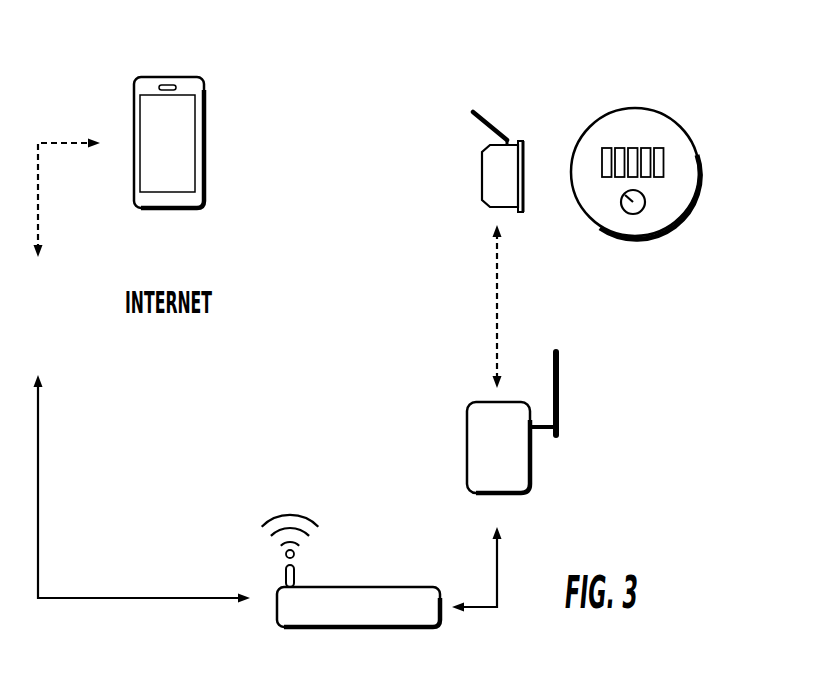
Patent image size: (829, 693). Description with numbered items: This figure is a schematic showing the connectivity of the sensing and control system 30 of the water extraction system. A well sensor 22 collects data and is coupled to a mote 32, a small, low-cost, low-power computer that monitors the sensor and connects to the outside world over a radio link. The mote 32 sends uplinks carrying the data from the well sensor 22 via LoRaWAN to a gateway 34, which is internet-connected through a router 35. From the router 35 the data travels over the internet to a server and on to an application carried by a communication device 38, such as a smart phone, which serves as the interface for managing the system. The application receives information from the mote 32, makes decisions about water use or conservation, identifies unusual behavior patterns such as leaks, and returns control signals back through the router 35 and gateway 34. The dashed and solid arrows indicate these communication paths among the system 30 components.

The well sensor 22 is at (693, 145).
The sensing and control system 30 is at (702, 320).
The mote 32 is at (505, 80).
The gateway 34 is at (477, 442).
The router 35 is at (318, 627).
The communication device 38 is at (180, 77).